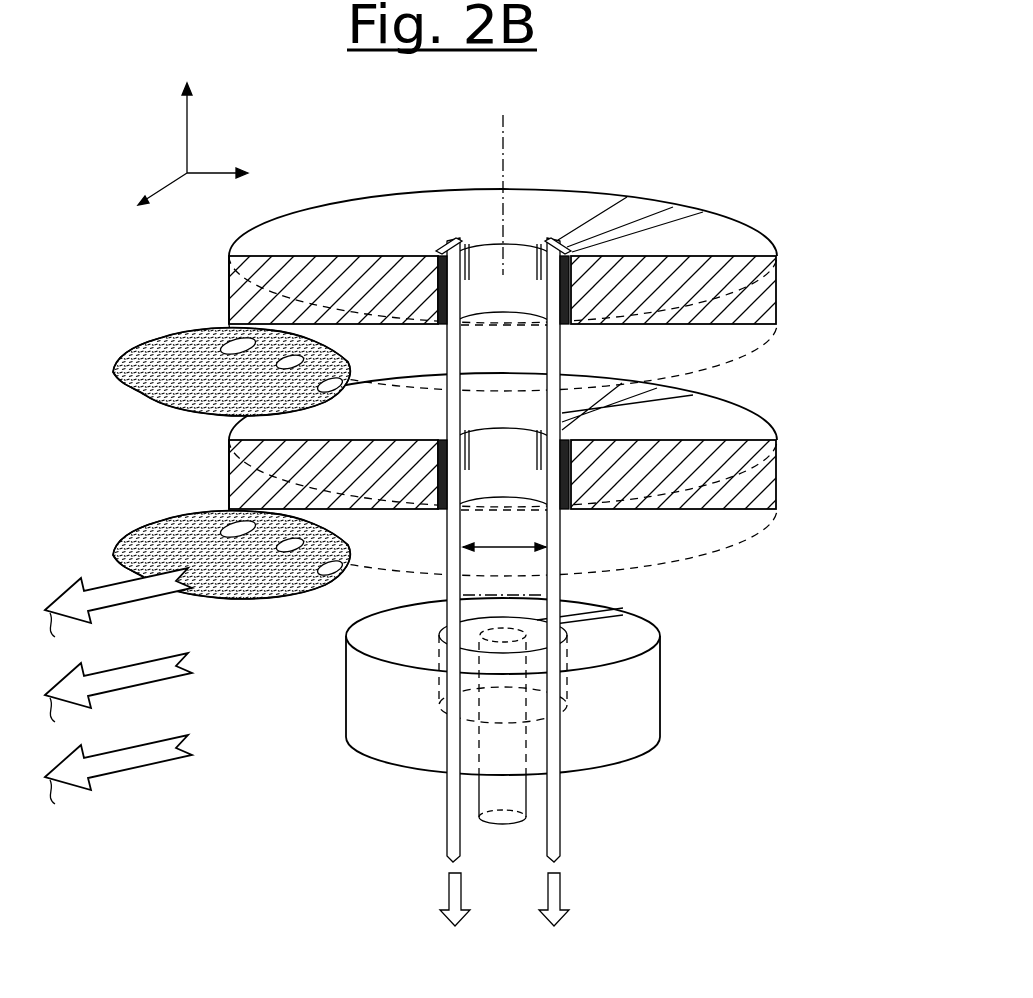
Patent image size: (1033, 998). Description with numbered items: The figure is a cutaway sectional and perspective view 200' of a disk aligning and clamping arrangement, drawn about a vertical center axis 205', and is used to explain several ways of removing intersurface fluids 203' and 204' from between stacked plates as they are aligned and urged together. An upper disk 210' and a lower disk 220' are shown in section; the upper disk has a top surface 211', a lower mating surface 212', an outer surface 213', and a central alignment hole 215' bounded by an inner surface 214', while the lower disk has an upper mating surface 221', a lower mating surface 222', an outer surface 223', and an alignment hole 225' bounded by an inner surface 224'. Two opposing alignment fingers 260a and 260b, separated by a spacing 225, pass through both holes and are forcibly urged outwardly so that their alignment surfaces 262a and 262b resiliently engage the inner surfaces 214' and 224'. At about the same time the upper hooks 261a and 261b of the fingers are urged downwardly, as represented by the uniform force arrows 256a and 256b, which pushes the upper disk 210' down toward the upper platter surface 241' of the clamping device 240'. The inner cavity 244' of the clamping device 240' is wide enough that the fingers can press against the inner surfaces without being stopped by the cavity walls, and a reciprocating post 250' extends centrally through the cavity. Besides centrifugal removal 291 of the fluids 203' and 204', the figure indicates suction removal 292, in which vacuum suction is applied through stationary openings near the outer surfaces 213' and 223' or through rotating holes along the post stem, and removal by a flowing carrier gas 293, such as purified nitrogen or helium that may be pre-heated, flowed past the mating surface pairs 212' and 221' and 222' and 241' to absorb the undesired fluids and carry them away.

The cutaway sectional and perspective view 200' is at (161, 146).
The intersurface fluid 203' is at (206, 387).
The intersurface fluid 204' is at (206, 542).
The central axis 205' is at (455, 195).
The upper disk 210' is at (514, 284).
The top surface of first disk 211' is at (506, 217).
The mating surface 212' is at (528, 357).
The outer surface 213' is at (186, 290).
The inner surface 214' is at (508, 263).
The alignment hole 215' is at (445, 241).
The lower disk 220' is at (515, 469).
The mating surface 221' is at (506, 401).
The mating surface 222' is at (522, 542).
The outer surface 223' is at (187, 474).
The inner surface 224' is at (503, 469).
The alignment hole 225' is at (493, 435).
The spacing between tubes 225 is at (504, 539).
The clamping device 240' is at (555, 674).
The upper platter surface 241' is at (609, 600).
The inner cavity 244' is at (536, 670).
The reciprocating post 250' is at (457, 726).
The uniform force arrow 256a is at (449, 882).
The uniform force arrow 256b is at (560, 882).
The alignment finger 260a is at (447, 835).
The alignment finger 260b is at (632, 843).
The upper hook 261a is at (440, 244).
The upper hook 261b is at (568, 244).
The alignment surface 262a is at (446, 540).
The alignment surface 262b is at (562, 540).
The centrifugal removal 291 is at (32, 594).
The suction removal 292 is at (200, 668).
The flowing carrier gas 293 is at (200, 750).